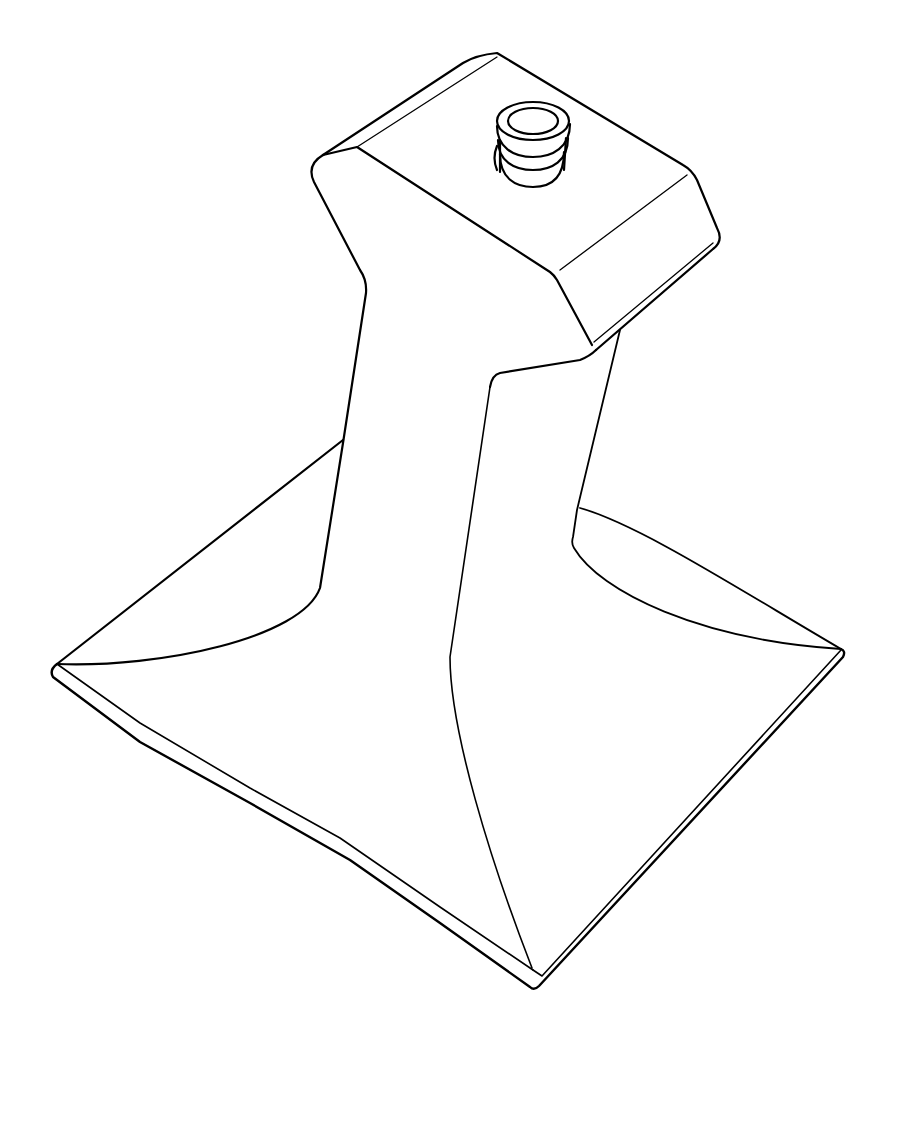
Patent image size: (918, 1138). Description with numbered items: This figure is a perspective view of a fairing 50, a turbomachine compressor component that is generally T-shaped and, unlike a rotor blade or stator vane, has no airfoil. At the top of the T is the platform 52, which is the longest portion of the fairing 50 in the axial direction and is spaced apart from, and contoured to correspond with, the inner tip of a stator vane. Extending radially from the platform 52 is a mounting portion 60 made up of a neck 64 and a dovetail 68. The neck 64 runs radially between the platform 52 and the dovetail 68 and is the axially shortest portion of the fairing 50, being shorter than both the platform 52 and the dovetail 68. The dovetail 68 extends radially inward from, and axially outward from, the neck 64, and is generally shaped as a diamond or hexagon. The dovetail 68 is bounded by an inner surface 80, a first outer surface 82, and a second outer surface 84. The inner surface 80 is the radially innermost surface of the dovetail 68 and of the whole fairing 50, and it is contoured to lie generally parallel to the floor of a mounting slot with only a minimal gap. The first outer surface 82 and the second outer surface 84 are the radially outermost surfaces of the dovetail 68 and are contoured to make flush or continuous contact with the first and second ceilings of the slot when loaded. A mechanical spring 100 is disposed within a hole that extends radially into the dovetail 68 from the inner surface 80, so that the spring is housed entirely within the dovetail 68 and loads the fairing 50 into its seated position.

The fairing 50 is at (758, 144).
The platform 52 is at (663, 800).
The mounting portion 60 is at (316, 364).
The neck 64 is at (560, 452).
The dovetail 68 is at (670, 240).
The inner surface 80 is at (627, 150).
The first outer surface 82 is at (568, 362).
The second outer surface 84 is at (338, 233).
The mechanical spring 100 is at (535, 103).